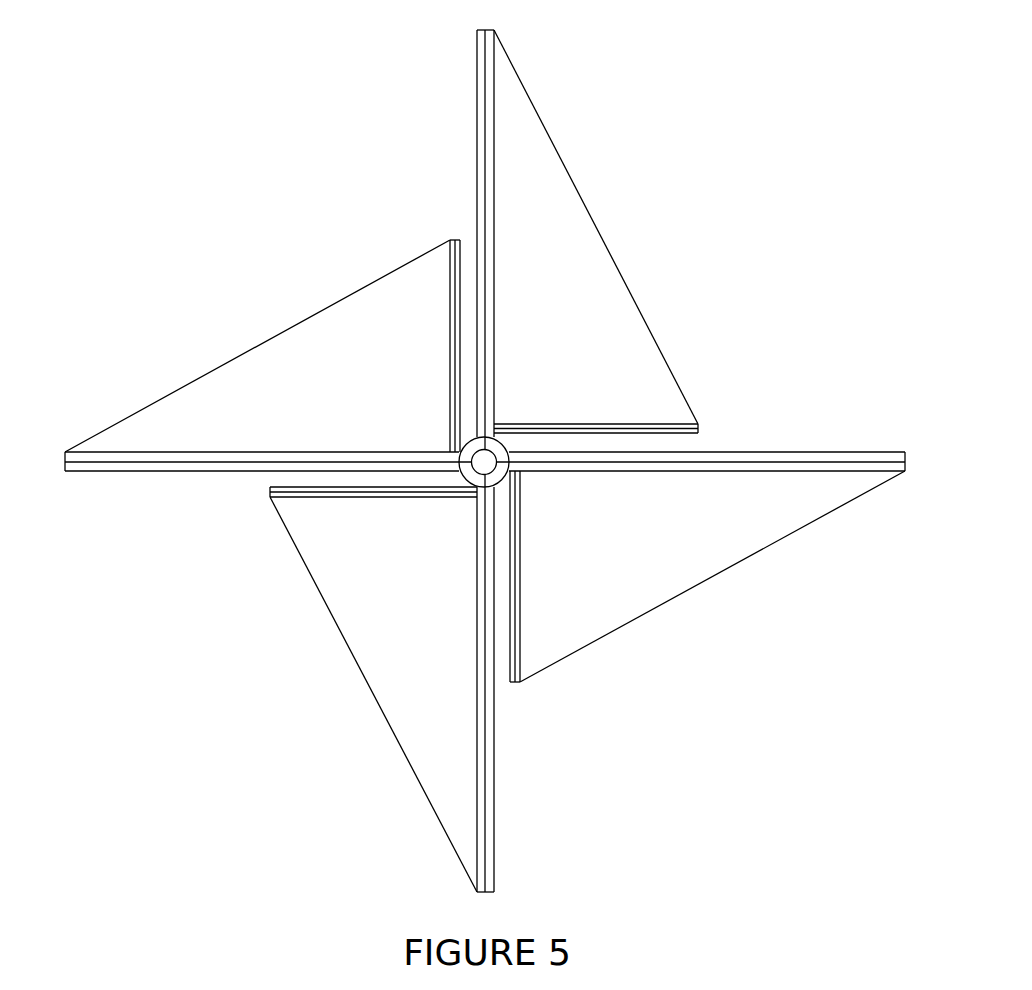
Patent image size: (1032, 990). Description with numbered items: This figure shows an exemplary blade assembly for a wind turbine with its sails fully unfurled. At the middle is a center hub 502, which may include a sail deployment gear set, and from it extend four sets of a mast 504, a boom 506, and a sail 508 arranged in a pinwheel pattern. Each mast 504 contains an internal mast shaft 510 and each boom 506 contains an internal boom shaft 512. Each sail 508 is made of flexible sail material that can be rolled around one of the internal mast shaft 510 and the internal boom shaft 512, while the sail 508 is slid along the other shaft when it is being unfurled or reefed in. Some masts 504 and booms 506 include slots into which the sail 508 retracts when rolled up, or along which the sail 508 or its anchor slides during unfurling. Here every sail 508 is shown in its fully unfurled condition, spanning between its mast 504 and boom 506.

The center hub 502 is at (470, 480).
The mast 504 is at (495, 800).
The boom 506 is at (452, 381).
The sail 508 is at (327, 640).
The internal mast shaft 510 is at (487, 748).
The internal boom shaft 512 is at (449, 352).